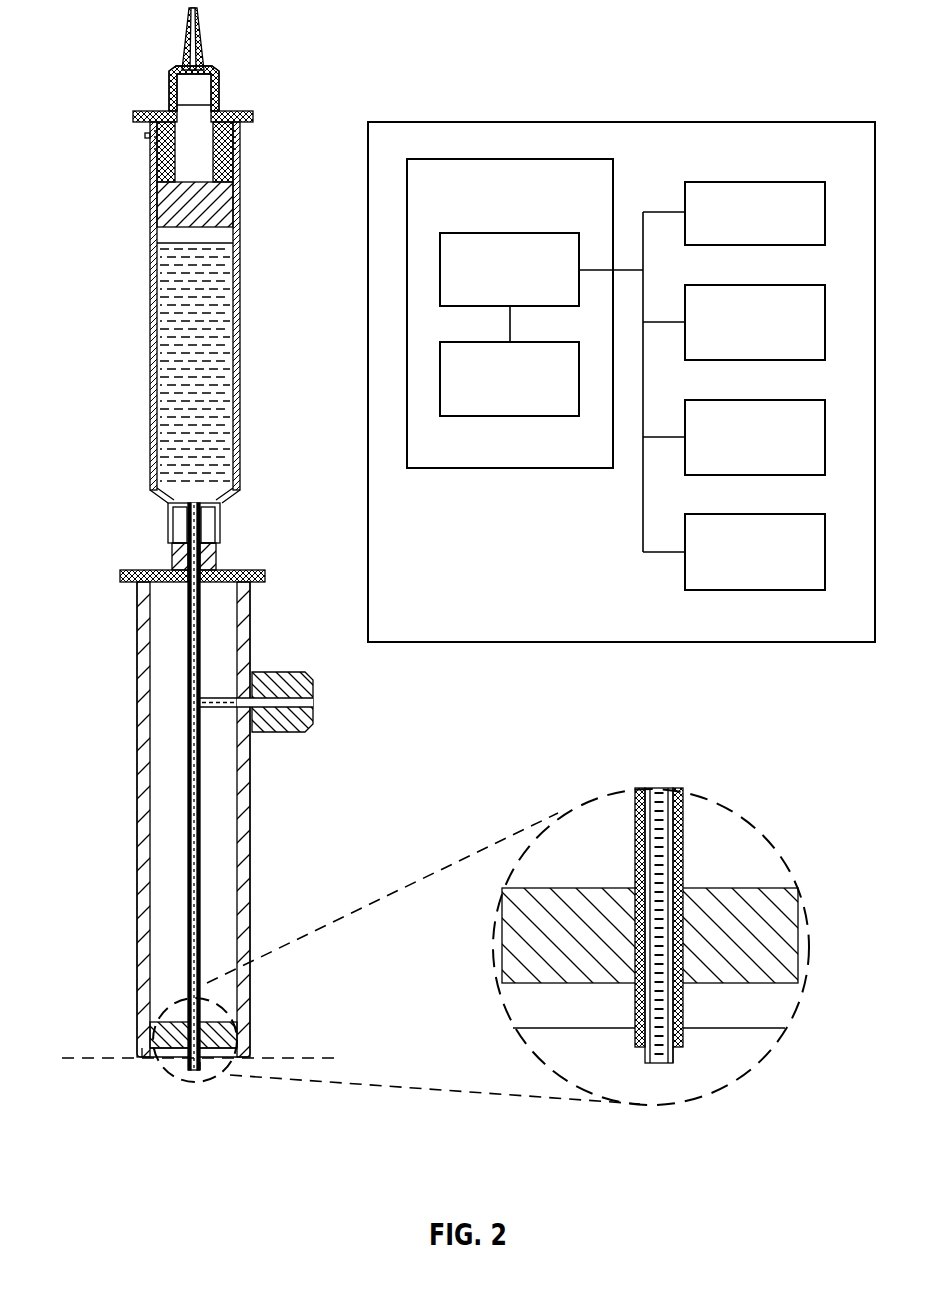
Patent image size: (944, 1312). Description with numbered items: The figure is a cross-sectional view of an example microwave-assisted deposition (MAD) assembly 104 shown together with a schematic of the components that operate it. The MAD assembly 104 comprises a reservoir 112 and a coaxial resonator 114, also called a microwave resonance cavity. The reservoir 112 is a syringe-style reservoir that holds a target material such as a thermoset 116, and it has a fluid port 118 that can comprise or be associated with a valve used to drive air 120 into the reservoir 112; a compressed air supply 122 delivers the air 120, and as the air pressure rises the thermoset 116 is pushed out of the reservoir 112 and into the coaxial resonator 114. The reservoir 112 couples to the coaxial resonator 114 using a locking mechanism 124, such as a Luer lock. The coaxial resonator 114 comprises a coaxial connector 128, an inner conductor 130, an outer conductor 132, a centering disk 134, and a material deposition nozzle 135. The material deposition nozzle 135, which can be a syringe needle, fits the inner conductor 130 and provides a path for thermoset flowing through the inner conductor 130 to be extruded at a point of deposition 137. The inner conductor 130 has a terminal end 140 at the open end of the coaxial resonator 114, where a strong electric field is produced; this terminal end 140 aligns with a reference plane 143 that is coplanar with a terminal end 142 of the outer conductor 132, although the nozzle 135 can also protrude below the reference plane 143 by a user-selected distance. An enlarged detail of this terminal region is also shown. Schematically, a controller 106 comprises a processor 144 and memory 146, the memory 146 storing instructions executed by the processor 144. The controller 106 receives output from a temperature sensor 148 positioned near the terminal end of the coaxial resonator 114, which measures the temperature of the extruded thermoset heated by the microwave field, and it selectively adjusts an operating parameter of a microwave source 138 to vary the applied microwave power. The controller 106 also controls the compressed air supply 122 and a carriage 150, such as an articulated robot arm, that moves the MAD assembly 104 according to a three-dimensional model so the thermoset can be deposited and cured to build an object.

The MAD assembly 104 is at (130, 63).
The controller 106 is at (468, 158).
The reservoir 112 is at (240, 185).
The coaxial resonator 114 is at (140, 935).
The thermoset 116 is at (164, 318).
The fluid port 118 is at (218, 78).
The air 120 is at (232, 212).
The compressed air supply 122 is at (745, 284).
The locking mechanism 124 is at (170, 515).
The coaxial connector 128 is at (292, 672).
The inner conductor 130 is at (187, 706).
The outer conductor 132 is at (145, 777).
The centering disk 134 is at (170, 1048).
The material deposition nozzle 135 is at (221, 1076).
The point of deposition 137 is at (630, 1086).
The microwave source 138 is at (745, 399).
The terminal end 140 is at (243, 1074).
The terminal end 142 is at (137, 1073).
The reference plane 143 is at (72, 1058).
The processor 144 is at (500, 232).
The memory 146 is at (500, 341).
The temperature sensor 148 is at (745, 181).
The carriage 150 is at (745, 513).